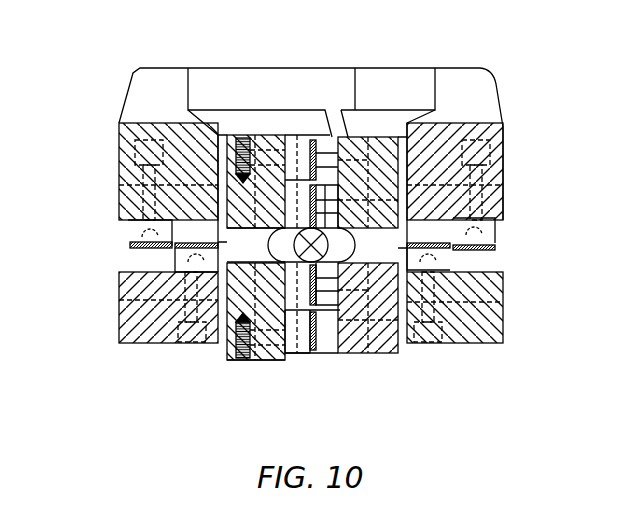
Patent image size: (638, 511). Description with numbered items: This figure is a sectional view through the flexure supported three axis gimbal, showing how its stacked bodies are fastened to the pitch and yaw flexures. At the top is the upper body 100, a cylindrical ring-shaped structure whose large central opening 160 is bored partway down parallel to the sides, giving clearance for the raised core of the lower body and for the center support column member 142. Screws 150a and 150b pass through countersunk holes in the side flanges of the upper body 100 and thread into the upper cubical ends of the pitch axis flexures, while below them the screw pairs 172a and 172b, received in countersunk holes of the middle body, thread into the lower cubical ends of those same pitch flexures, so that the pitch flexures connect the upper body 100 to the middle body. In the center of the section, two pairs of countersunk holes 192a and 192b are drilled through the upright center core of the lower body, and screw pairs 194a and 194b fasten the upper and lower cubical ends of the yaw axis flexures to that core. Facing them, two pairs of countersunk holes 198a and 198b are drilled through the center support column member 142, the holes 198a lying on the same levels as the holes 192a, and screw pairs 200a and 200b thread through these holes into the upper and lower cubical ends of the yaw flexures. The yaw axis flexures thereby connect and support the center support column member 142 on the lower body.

The upper body 100 is at (487, 70).
The central opening 160 is at (408, 73).
The screw 150a is at (457, 160).
The screw 150b is at (155, 140).
The screw pair 172a is at (430, 345).
The screw pair 172b is at (192, 345).
The screw pair 200a is at (232, 135).
The screw pair 200b is at (228, 342).
The countersunk holes 198a is at (237, 142).
The countersunk holes 198b is at (234, 355).
The countersunk holes 192a is at (326, 187).
The countersunk holes 192b is at (357, 305).
The screw pair 194a is at (392, 200).
The screw pair 194b is at (395, 300).
The center support column member 142 is at (268, 360).